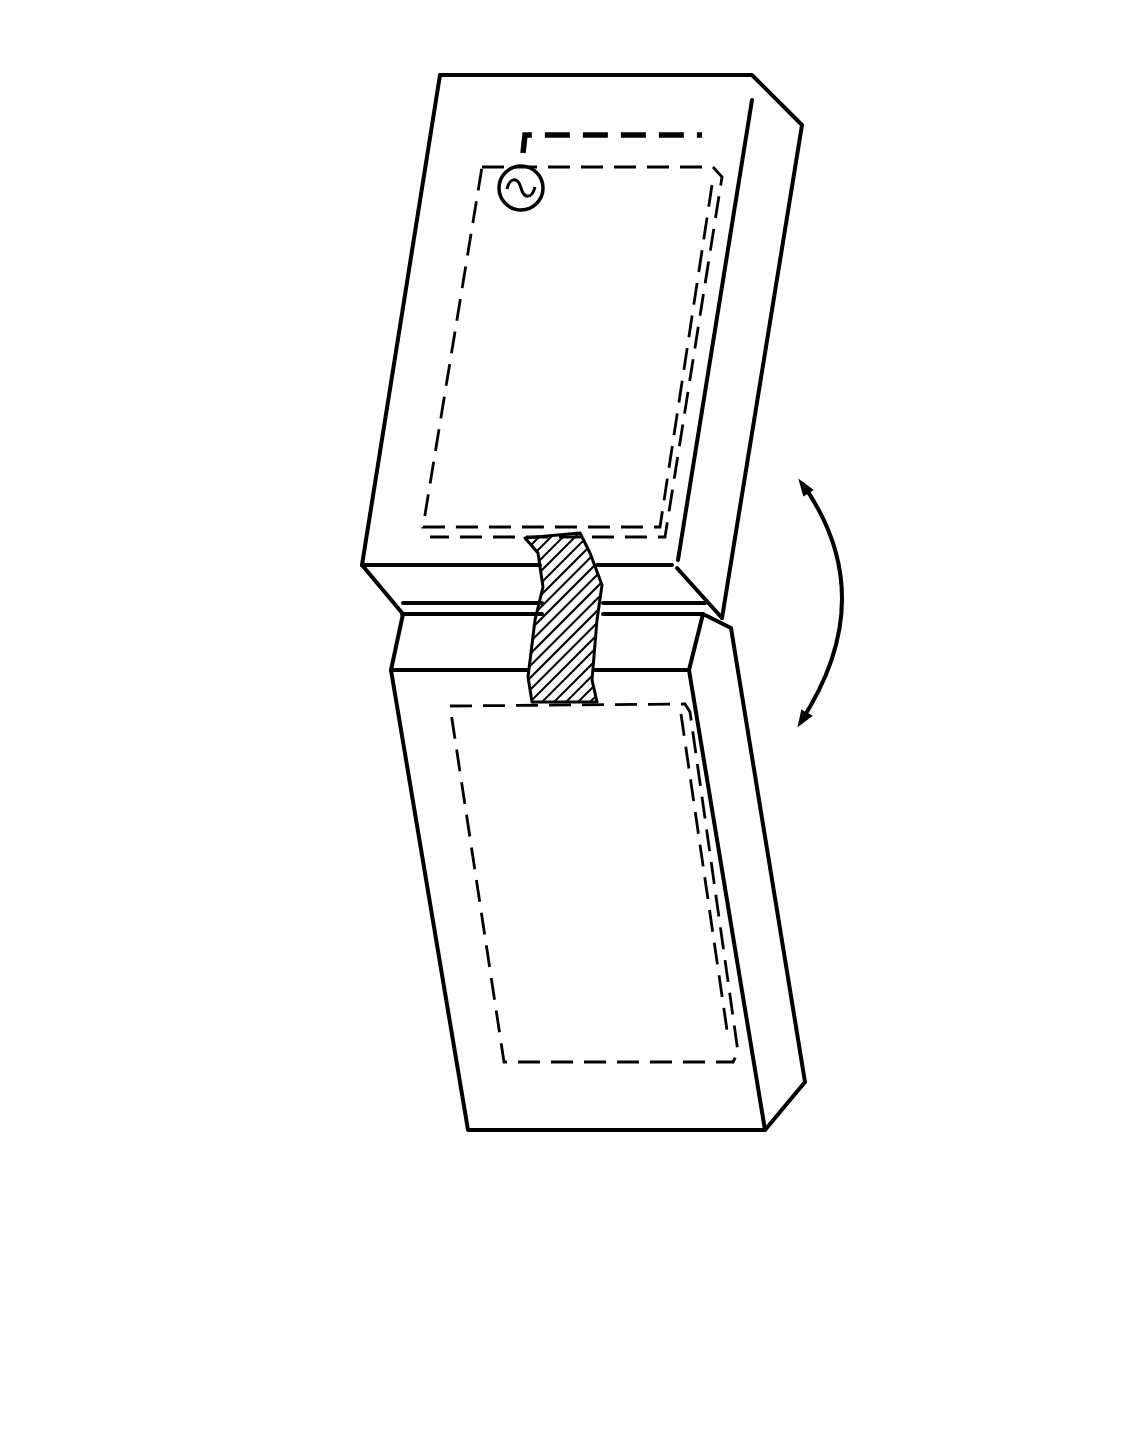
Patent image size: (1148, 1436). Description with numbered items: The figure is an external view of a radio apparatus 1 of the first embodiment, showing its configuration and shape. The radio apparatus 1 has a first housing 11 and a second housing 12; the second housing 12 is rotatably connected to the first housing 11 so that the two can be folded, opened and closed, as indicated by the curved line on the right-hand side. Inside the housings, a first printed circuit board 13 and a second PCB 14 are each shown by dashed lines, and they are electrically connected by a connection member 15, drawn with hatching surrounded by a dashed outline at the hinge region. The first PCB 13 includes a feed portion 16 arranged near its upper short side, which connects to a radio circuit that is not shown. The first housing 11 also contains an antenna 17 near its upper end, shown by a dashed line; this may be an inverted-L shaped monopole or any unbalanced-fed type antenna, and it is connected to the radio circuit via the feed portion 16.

The radio apparatus 1 is at (283, 146).
The first housing 11 is at (387, 383).
The second housing 12 is at (440, 993).
The first printed circuit board 13 is at (462, 288).
The second PCB 14 is at (468, 835).
The connection member 15 is at (528, 652).
The feed portion 16 is at (527, 163).
The antenna 17 is at (653, 133).